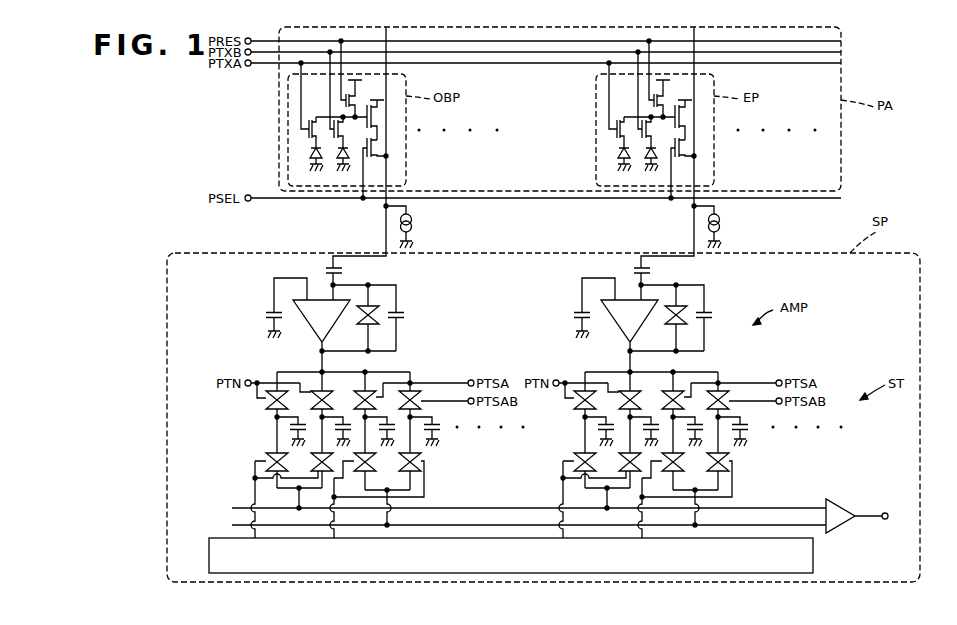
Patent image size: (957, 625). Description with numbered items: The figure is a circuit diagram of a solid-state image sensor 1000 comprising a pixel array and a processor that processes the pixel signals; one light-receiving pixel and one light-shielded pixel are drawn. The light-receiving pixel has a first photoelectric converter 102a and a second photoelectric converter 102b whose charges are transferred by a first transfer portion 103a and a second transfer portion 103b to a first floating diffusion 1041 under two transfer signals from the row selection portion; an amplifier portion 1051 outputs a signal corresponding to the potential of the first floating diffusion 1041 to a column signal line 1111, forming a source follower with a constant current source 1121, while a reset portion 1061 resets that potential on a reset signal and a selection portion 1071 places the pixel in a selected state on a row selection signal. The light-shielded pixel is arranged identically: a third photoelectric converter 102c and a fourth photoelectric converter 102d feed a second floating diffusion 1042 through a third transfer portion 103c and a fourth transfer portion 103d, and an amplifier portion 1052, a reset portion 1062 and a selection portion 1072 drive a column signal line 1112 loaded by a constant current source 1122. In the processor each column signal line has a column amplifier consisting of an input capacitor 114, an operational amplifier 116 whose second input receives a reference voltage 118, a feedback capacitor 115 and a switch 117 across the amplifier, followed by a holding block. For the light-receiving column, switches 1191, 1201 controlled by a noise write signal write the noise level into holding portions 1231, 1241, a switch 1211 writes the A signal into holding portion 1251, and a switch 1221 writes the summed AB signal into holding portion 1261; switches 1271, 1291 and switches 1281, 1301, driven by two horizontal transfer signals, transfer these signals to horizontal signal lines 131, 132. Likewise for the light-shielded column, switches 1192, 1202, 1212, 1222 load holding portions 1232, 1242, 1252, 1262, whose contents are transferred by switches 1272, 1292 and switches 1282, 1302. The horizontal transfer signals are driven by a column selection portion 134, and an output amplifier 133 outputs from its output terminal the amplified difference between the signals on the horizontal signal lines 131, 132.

The solid-state image sensor 1000 is at (892, 163).
The reset portion 1062 is at (346, 100).
The reset portion 1061 is at (608, 79).
The third transfer portion 103c is at (309, 129).
The fourth transfer portion 103d is at (334, 136).
The first transfer portion 103a is at (585, 104).
The second transfer portion 103b is at (600, 99).
The third photoelectric converter 102c is at (310, 153).
The fourth photoelectric converter 102d is at (337, 160).
The first photoelectric converter 102a is at (589, 159).
The second photoelectric converter 102b is at (627, 166).
The second floating diffusion 1042 is at (368, 120).
The first floating diffusion 1041 is at (687, 129).
The amplifier portion 1052 is at (378, 100).
The amplifier portion 1051 is at (714, 89).
The selection portion 1072 is at (377, 157).
The selection portion 1071 is at (710, 169).
The column signal line 1112 is at (385, 218).
The column signal line 1111 is at (667, 147).
The constant current source 1122 is at (413, 223).
The constant current source 1121 is at (733, 226).
The input capacitor 114 is at (326, 270).
The feedback capacitor 115 is at (407, 317).
The operational amplifier 116 is at (305, 319).
The switch 117 is at (360, 317).
The reference voltage 118 is at (270, 306).
The switch 1192 is at (266, 404).
The switch 1202 is at (312, 392).
The switch 1212 is at (363, 389).
The switch 1222 is at (421, 404).
The holding portion 1232 is at (290, 427).
The holding portion 1242 is at (350, 422).
The holding portion 1252 is at (393, 447).
The holding portion 1262 is at (440, 438).
The switch 1272 is at (266, 458).
The switch 1282 is at (311, 464).
The switch 1292 is at (354, 467).
The switch 1302 is at (399, 455).
The switch 1191 is at (561, 412).
The switch 1201 is at (617, 404).
The switch 1211 is at (663, 404).
The switch 1221 is at (743, 412).
The holding portion 1231 is at (570, 430).
The holding portion 1241 is at (647, 412).
The holding portion 1251 is at (719, 443).
The holding portion 1261 is at (755, 436).
The switch 1271 is at (561, 465).
The switch 1281 is at (583, 470).
The switch 1291 is at (647, 479).
The switch 1301 is at (686, 476).
The horizontal signal line 131 is at (232, 507).
The horizontal signal line 132 is at (232, 524).
The output amplifier 133 is at (841, 506).
The column selection portion 134 is at (813, 555).